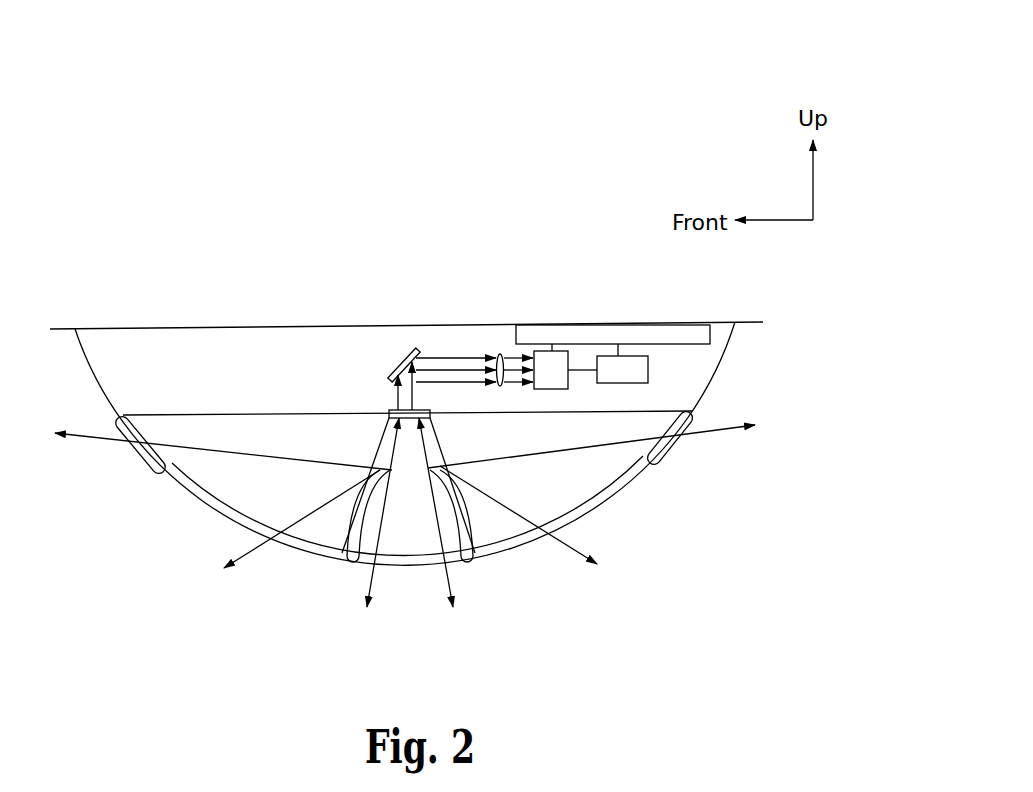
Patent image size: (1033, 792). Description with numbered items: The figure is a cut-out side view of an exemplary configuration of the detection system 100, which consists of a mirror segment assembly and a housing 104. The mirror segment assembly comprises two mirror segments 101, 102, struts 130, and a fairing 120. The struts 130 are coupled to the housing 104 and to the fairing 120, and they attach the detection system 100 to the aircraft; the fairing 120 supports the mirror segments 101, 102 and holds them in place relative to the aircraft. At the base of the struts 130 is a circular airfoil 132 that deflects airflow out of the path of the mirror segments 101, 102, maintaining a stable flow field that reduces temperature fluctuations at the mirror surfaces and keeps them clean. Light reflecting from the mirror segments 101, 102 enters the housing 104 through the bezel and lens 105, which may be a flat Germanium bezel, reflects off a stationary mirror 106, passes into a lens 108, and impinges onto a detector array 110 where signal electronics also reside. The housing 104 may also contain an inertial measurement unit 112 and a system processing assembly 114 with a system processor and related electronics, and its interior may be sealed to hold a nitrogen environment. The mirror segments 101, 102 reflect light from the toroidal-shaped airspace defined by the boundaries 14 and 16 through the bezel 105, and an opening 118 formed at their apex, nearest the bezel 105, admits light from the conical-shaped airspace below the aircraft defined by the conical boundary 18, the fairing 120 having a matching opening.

The detection system 100 is at (626, 39).
The housing 104 is at (194, 340).
The bezel and lens 105 is at (388, 415).
The stationary mirror 106 is at (397, 353).
The lens 108 is at (497, 355).
The detector array 110 is at (550, 390).
The inertial measurement unit (IMU) 112 is at (650, 370).
The system processing assembly 114 is at (570, 326).
The opening 118 is at (417, 470).
The fairing 120 is at (416, 539).
The struts 130 is at (185, 493).
The circular airfoil 132 is at (140, 463).
The boundary 14 is at (78, 433).
The boundary 16 is at (262, 557).
The conical boundary 18 is at (365, 597).
The mirror segment 101 is at (345, 530).
The mirror segment 102 is at (473, 513).